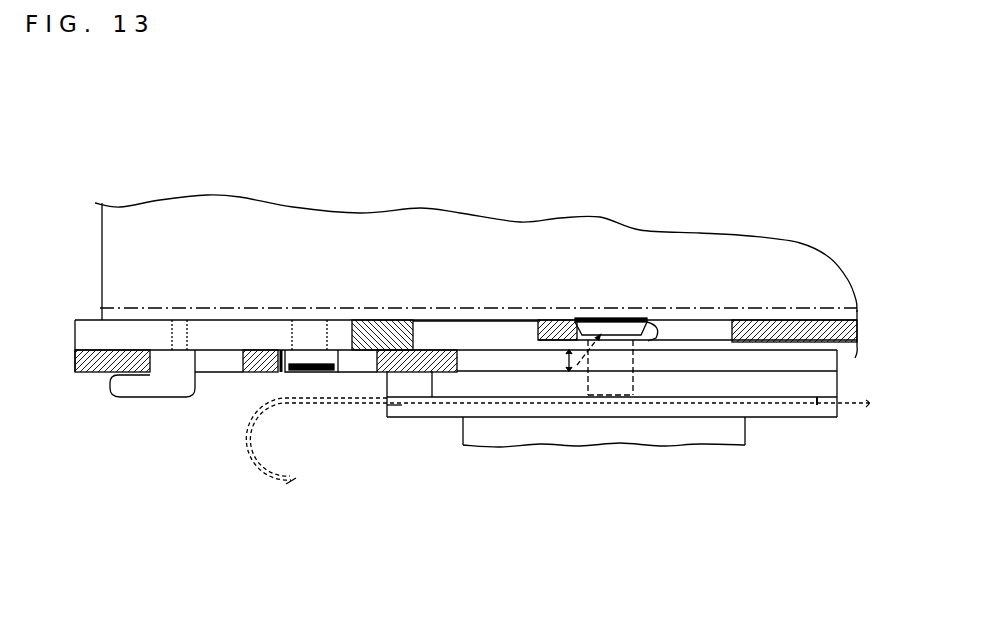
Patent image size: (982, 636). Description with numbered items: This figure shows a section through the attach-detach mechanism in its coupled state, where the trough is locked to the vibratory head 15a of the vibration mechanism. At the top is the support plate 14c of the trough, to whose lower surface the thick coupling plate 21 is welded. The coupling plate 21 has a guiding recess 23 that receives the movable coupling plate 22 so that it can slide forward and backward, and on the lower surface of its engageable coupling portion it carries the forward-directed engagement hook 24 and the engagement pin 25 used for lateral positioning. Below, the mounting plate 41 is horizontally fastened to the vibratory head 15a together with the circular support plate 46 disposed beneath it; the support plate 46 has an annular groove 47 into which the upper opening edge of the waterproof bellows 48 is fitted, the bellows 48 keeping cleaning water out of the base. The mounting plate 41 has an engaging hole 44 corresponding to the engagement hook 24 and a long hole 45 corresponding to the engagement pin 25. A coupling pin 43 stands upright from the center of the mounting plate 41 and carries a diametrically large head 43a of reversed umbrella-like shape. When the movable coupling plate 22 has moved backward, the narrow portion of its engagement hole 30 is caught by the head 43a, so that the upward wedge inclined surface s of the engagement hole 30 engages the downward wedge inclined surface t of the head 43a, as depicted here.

The support plate 14c is at (102, 236).
The coupling plate 21 is at (246, 318).
The movable coupling plate 22 is at (770, 320).
The guiding recess 23 is at (458, 330).
The engagement hook 24 is at (151, 397).
The engagement pin 25 is at (308, 372).
The engagement hole 30 is at (704, 330).
The mounting plate 41 is at (428, 399).
The coupling pin 43 is at (605, 316).
The diametrically large head 43a is at (655, 330).
The engaging hole 44 is at (218, 362).
The long hole 45 is at (353, 366).
The support plate 46 is at (505, 418).
The annular groove 47 is at (403, 403).
The waterproof bellows 48 is at (250, 469).
The vibratory head 15a is at (686, 448).
The wedge inclined surface s is at (587, 316).
The wedge inclined surface t is at (582, 352).